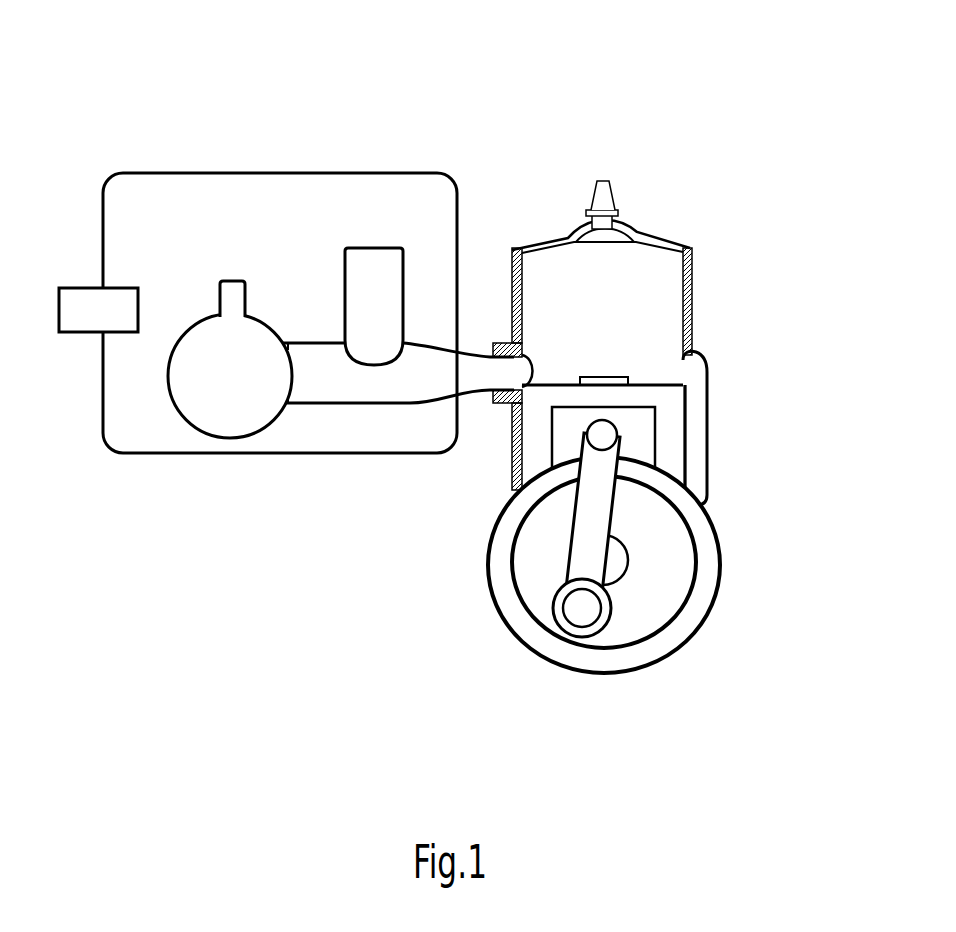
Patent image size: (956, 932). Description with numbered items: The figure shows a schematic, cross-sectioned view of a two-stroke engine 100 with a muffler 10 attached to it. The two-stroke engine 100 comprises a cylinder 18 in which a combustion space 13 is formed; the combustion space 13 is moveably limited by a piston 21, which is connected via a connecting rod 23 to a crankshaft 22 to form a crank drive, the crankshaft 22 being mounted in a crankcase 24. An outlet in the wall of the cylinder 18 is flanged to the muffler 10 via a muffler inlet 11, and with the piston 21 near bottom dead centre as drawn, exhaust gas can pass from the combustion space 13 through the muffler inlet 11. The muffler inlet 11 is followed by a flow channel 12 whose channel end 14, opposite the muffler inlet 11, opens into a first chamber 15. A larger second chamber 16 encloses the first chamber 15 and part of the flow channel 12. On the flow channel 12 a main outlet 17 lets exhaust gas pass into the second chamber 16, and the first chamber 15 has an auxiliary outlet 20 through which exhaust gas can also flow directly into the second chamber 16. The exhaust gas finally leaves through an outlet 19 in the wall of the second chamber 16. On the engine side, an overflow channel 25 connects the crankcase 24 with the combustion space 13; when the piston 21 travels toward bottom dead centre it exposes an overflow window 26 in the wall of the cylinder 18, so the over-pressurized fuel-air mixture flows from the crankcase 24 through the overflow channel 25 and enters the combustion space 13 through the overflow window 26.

The muffler 10 is at (393, 118).
The two-stroke engine 100 is at (683, 200).
The muffler inlet 11 is at (537, 358).
The flow channel 12 is at (380, 405).
The combustion space 13 is at (656, 334).
The channel end 14 is at (290, 412).
The first chamber 15 is at (228, 413).
The second chamber 16 is at (228, 190).
The main outlet 17 is at (343, 293).
The cylinder 18 is at (695, 298).
The outlet 19 is at (88, 335).
The auxiliary outlet 20 is at (217, 296).
The piston 21 is at (550, 452).
The crankshaft 22 is at (628, 563).
The connecting rod 23 is at (572, 545).
The crankcase 24 is at (512, 628).
The overflow channel 25 is at (697, 413).
The overflow window 26 is at (690, 362).